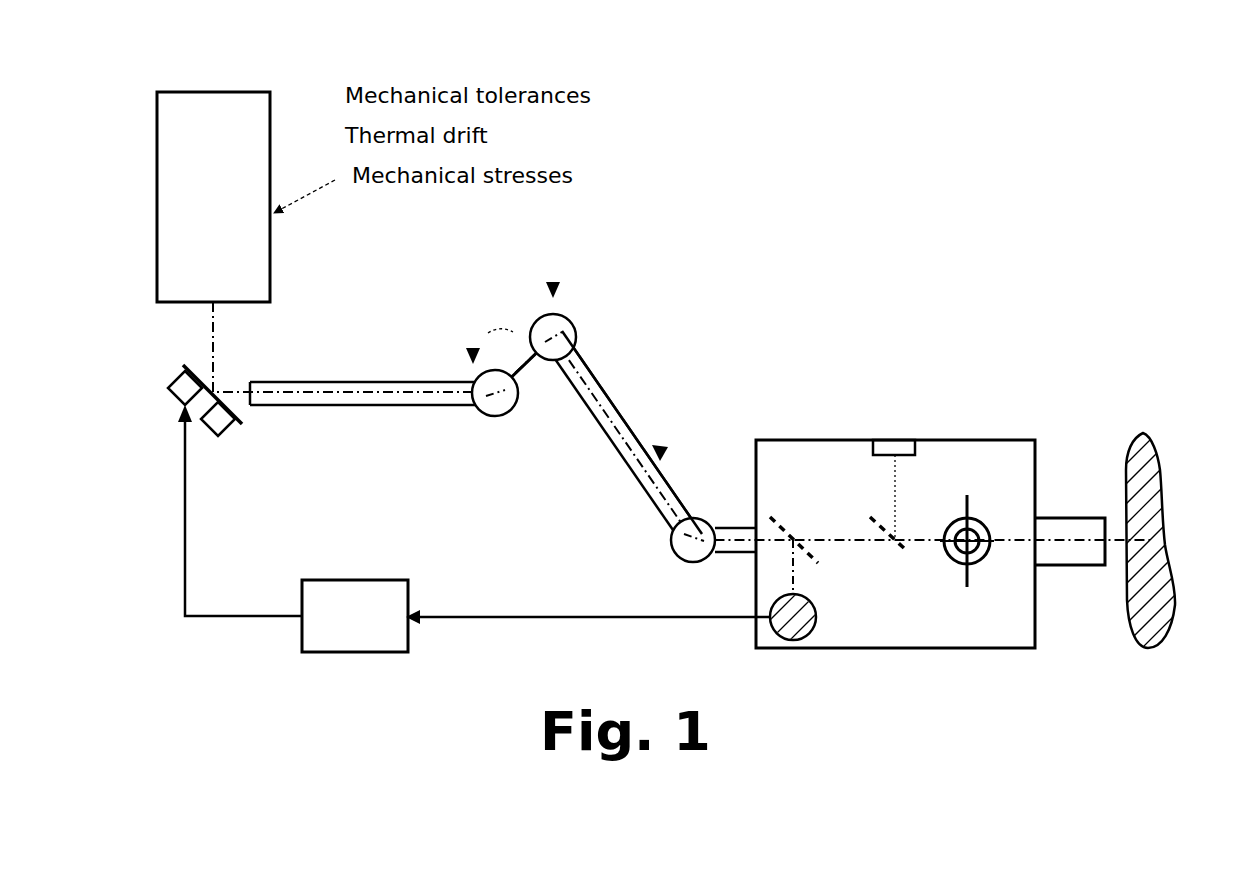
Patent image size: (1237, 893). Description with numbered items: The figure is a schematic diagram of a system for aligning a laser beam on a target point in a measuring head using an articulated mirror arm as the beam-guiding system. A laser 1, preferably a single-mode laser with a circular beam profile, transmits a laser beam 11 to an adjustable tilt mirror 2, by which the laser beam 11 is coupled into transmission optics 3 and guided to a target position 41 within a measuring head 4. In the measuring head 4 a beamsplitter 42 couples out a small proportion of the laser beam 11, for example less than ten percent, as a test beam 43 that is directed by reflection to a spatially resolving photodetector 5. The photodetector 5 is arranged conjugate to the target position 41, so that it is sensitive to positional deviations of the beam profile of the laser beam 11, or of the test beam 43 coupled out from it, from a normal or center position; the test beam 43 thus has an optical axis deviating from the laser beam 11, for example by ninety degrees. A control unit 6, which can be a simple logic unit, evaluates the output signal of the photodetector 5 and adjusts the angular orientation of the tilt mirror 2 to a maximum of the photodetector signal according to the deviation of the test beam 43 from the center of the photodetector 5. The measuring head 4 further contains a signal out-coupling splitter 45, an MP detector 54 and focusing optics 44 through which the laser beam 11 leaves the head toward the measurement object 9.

The laser 1 is at (258, 266).
The adjustable tilt mirror 2 is at (242, 424).
The transmission optics 3 is at (382, 376).
The laser beam 11 is at (613, 407).
The measuring head 4 is at (948, 440).
The MP detector 54 is at (880, 440).
The beamsplitter 42 is at (785, 523).
The test beam 43 is at (795, 573).
The spatially resolving photodetector 5 is at (768, 605).
The signal out-coupling splitter 45 is at (900, 545).
The target position 41 is at (970, 517).
The focusing optics 44 is at (1057, 553).
The measurement object 9 is at (1146, 433).
The control unit 6 is at (362, 580).